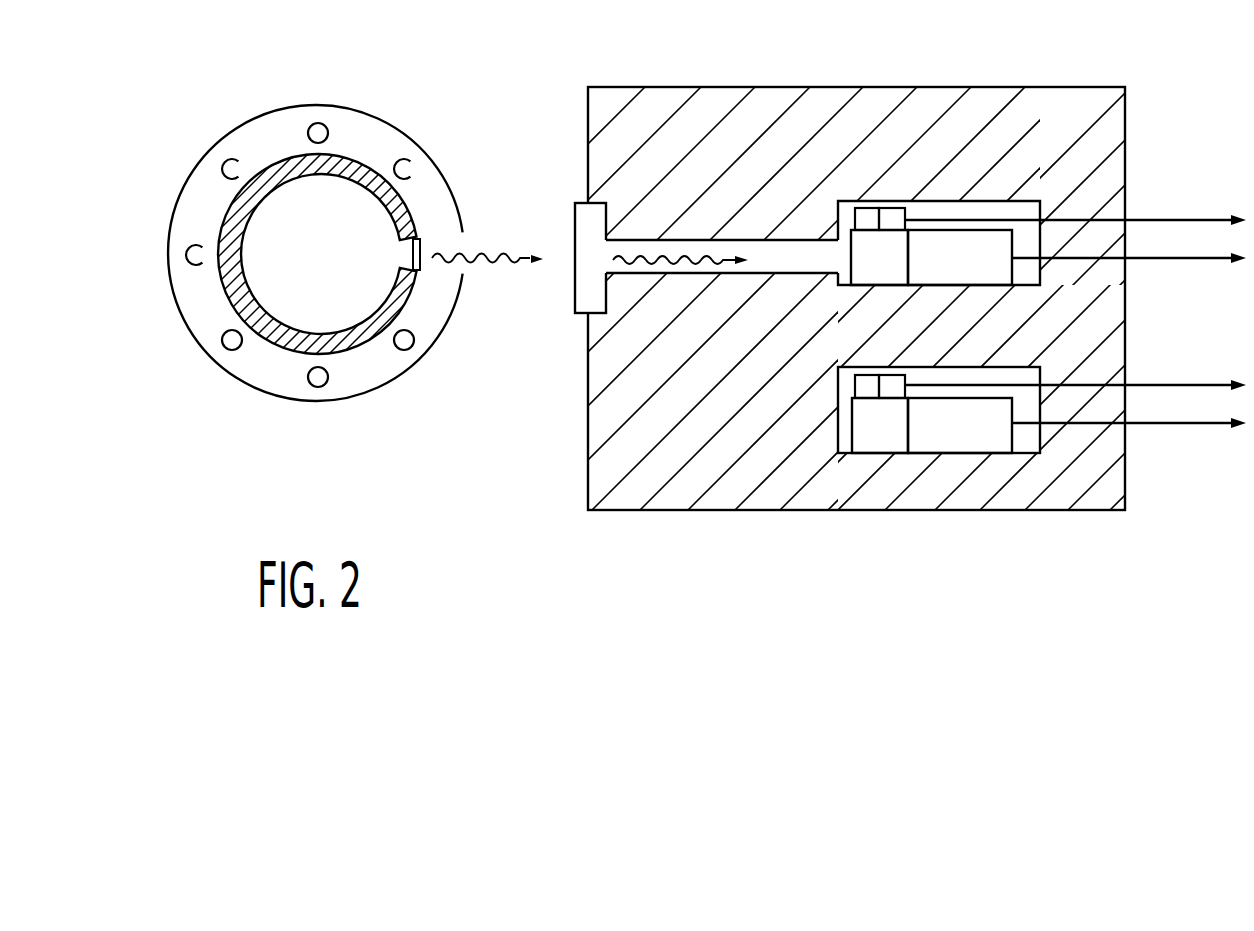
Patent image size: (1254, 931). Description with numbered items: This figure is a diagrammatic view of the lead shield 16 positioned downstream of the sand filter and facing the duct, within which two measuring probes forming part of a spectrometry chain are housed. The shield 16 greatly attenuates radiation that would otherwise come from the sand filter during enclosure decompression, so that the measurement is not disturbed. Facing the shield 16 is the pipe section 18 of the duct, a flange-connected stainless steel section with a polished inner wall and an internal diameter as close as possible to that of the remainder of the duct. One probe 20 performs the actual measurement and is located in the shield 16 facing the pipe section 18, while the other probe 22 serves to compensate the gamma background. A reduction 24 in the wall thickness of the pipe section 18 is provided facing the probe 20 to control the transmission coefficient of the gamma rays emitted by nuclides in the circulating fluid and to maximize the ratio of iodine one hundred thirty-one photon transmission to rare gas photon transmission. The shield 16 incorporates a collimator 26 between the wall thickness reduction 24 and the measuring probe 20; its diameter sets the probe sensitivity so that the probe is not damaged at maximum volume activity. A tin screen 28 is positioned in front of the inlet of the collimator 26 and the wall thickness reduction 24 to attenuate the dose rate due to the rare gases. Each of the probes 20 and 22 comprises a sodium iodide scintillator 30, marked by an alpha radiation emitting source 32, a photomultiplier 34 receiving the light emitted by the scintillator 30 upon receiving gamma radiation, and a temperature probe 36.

The shield 16 is at (610, 102).
The pipe section 18 is at (240, 115).
The measuring probe 20 is at (1014, 206).
The probe 22 is at (1014, 372).
The wall thickness reduction 24 is at (412, 254).
The collimator 26 is at (627, 247).
The screen 28 is at (586, 297).
The sodium iodide scintillator 30 is at (866, 266).
The alpha radiation emitting source 32 is at (867, 210).
The photomultiplier 34 is at (940, 415).
The temperature probe 36 is at (898, 212).